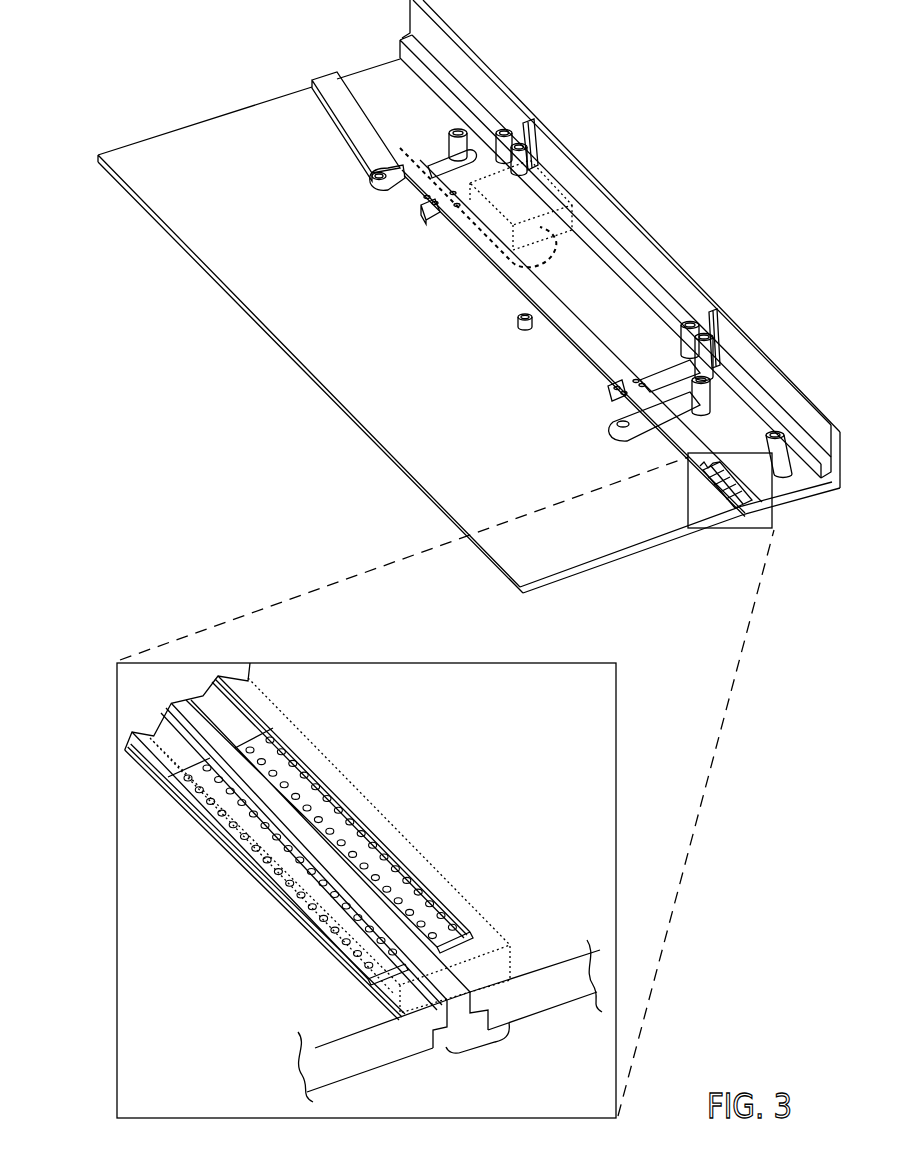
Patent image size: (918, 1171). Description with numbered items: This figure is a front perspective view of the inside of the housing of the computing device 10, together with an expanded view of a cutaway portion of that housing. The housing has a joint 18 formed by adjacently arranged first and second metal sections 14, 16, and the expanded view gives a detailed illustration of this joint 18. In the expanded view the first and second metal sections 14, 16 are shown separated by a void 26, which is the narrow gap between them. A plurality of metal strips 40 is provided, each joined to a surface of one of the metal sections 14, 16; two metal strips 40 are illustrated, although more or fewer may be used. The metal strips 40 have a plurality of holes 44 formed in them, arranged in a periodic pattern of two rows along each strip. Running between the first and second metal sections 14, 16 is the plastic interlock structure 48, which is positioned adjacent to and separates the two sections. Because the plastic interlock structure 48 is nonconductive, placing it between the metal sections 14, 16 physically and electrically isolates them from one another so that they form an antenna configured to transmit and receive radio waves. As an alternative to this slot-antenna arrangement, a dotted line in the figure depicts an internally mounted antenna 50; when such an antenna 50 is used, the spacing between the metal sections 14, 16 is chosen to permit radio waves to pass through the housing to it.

The computing device 10 is at (690, 103).
The first metal section 14 is at (445, 495).
The second metal section 16 is at (792, 486).
The joint 18 is at (492, 1043).
The void 26 is at (458, 1027).
The metal strips 40 is at (377, 937).
The holes 44 is at (385, 856).
The plastic interlock structure 48 is at (580, 340).
The internally mounted antenna 50 is at (472, 227).